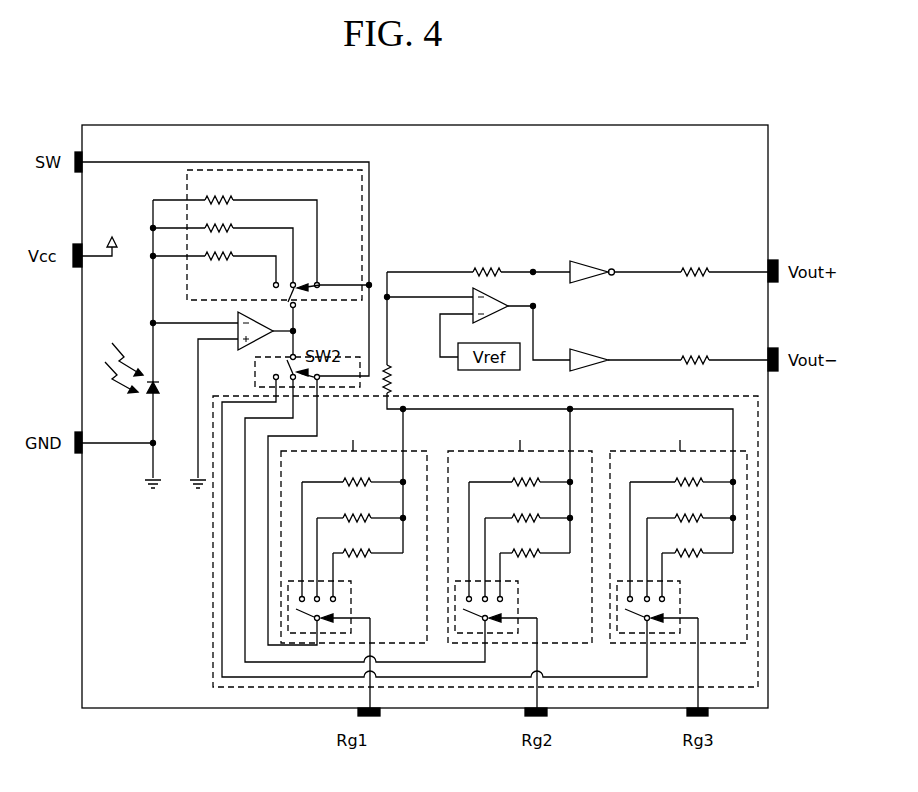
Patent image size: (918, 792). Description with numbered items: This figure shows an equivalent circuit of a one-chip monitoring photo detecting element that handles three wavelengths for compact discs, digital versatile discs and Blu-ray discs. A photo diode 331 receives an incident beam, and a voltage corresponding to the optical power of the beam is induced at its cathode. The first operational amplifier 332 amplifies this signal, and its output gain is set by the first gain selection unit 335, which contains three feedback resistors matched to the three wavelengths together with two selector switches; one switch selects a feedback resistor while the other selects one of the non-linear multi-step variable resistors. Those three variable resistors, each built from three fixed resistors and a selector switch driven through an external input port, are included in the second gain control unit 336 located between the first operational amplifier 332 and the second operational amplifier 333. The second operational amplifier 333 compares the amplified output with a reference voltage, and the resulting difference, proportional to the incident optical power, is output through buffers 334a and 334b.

The photo diode 331 is at (145, 397).
The first operational amplifier 332 is at (242, 348).
The second operational amplifier 333 is at (475, 285).
The buffer 334a is at (586, 262).
The buffer 334b is at (586, 350).
The first gain selection unit 335 is at (363, 191).
The second gain control unit 336 is at (213, 618).